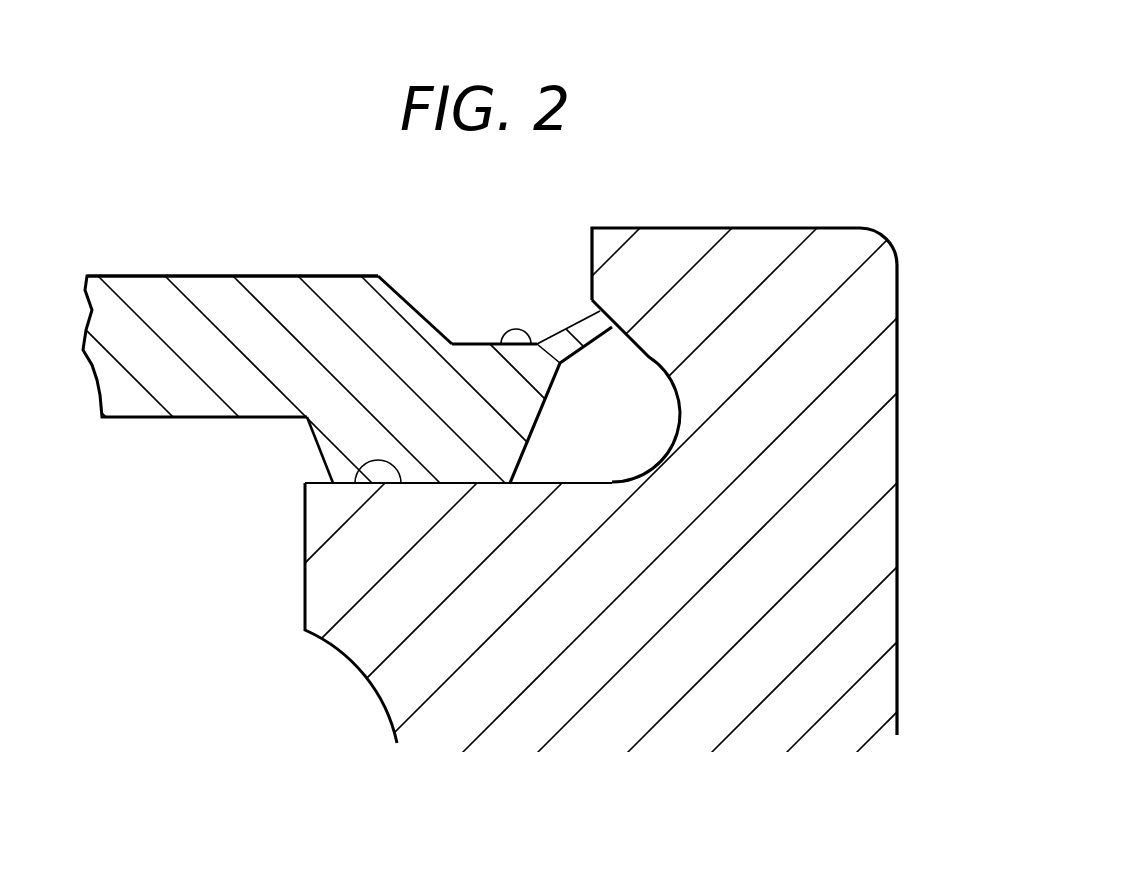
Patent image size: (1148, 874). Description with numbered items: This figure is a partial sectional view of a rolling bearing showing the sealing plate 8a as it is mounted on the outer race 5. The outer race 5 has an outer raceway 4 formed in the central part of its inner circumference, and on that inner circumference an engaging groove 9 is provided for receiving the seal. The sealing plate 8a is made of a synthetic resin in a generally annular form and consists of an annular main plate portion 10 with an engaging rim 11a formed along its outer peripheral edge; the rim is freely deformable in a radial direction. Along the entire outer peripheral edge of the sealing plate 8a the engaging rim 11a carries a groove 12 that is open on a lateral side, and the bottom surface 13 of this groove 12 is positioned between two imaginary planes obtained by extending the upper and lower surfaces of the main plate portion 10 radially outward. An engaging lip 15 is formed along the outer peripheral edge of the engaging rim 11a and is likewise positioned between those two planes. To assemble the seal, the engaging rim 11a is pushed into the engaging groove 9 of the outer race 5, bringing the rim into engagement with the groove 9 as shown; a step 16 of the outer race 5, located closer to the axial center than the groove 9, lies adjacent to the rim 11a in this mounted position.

The outer raceway 4 is at (343, 653).
The outer race 5 is at (873, 460).
The sealing plate 8a is at (292, 305).
The engaging groove 9 is at (668, 375).
The main plate portion 10 is at (210, 298).
The engaging rim 11a is at (460, 408).
The groove 12 is at (422, 307).
The bottom surface 13 is at (553, 371).
The engaging lip 15 is at (583, 313).
The step 16 is at (347, 485).